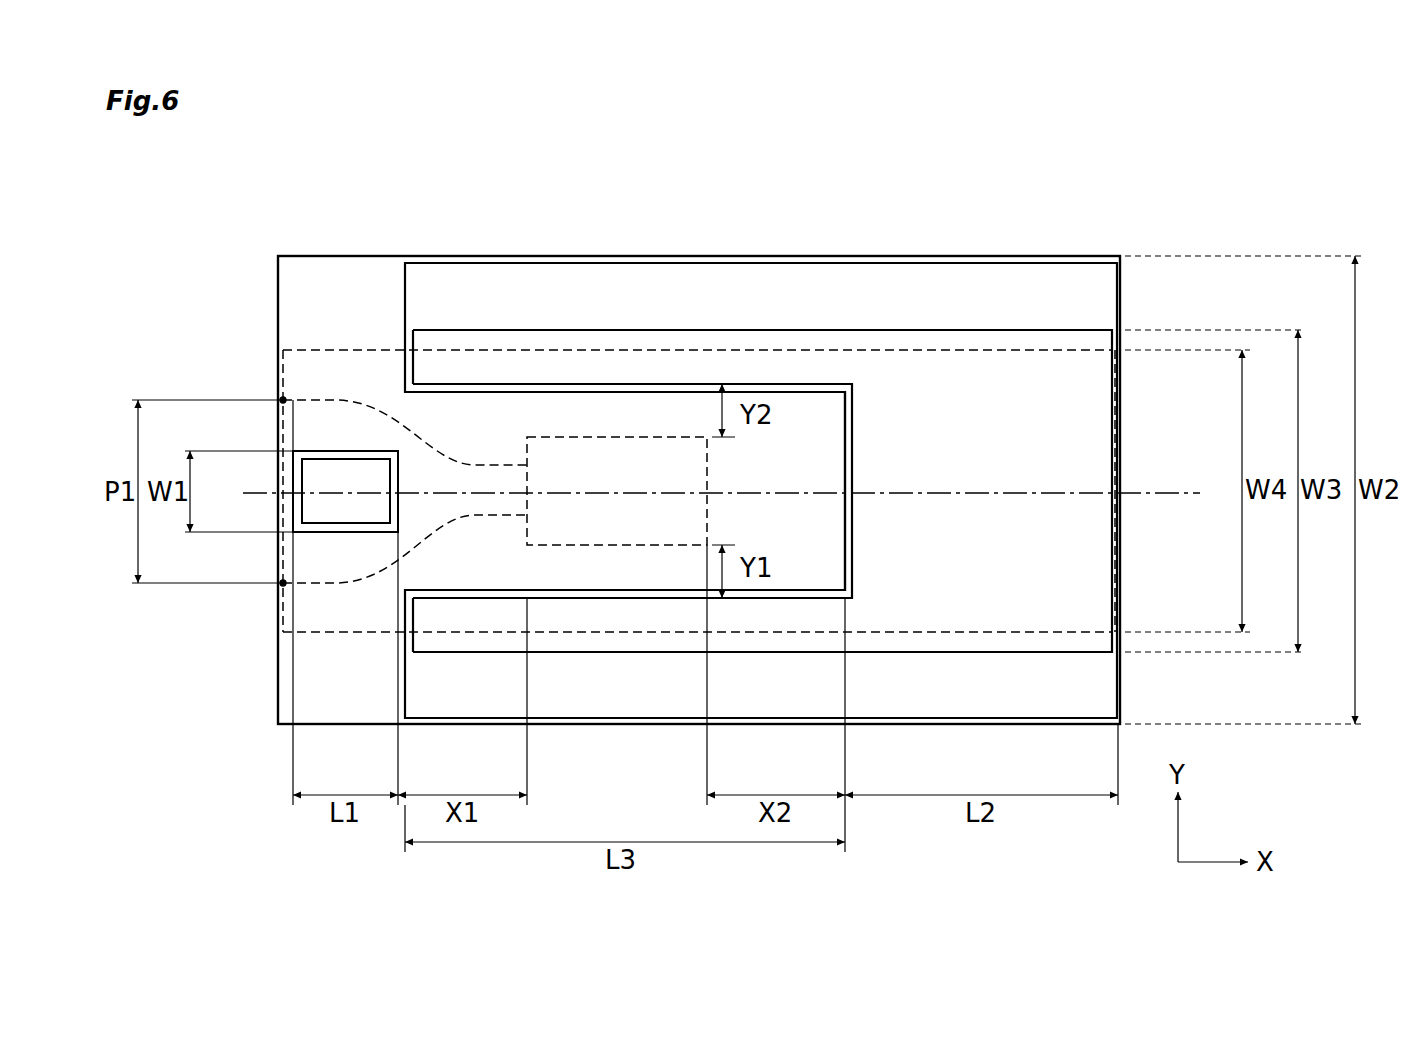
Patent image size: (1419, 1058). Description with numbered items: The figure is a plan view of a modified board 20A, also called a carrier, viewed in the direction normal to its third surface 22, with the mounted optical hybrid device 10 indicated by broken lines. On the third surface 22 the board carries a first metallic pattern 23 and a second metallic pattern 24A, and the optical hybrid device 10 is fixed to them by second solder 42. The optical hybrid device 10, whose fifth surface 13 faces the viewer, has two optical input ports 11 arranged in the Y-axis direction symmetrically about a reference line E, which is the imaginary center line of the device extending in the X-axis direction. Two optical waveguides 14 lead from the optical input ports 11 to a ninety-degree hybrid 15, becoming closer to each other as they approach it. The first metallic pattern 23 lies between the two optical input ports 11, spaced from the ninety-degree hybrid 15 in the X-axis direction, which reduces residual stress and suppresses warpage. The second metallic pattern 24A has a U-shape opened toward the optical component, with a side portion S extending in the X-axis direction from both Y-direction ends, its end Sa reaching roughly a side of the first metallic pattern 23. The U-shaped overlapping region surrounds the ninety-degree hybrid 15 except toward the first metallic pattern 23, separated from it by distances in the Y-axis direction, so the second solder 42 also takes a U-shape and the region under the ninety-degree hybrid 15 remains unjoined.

The optical hybrid device 10 is at (333, 346).
The optical input ports 11 is at (282, 398).
The fifth surface 13 is at (372, 372).
The optical waveguides 14 is at (323, 393).
The 90-degree hybrid 15 is at (613, 548).
The board 20A is at (858, 189).
The third surface 22 is at (388, 292).
The first metallic pattern 23 is at (345, 451).
The second metallic pattern 24A is at (1055, 270).
The second solder 42 is at (308, 505).
The side portion S is at (636, 290).
The end Sa is at (414, 326).
The reference line E is at (1190, 492).